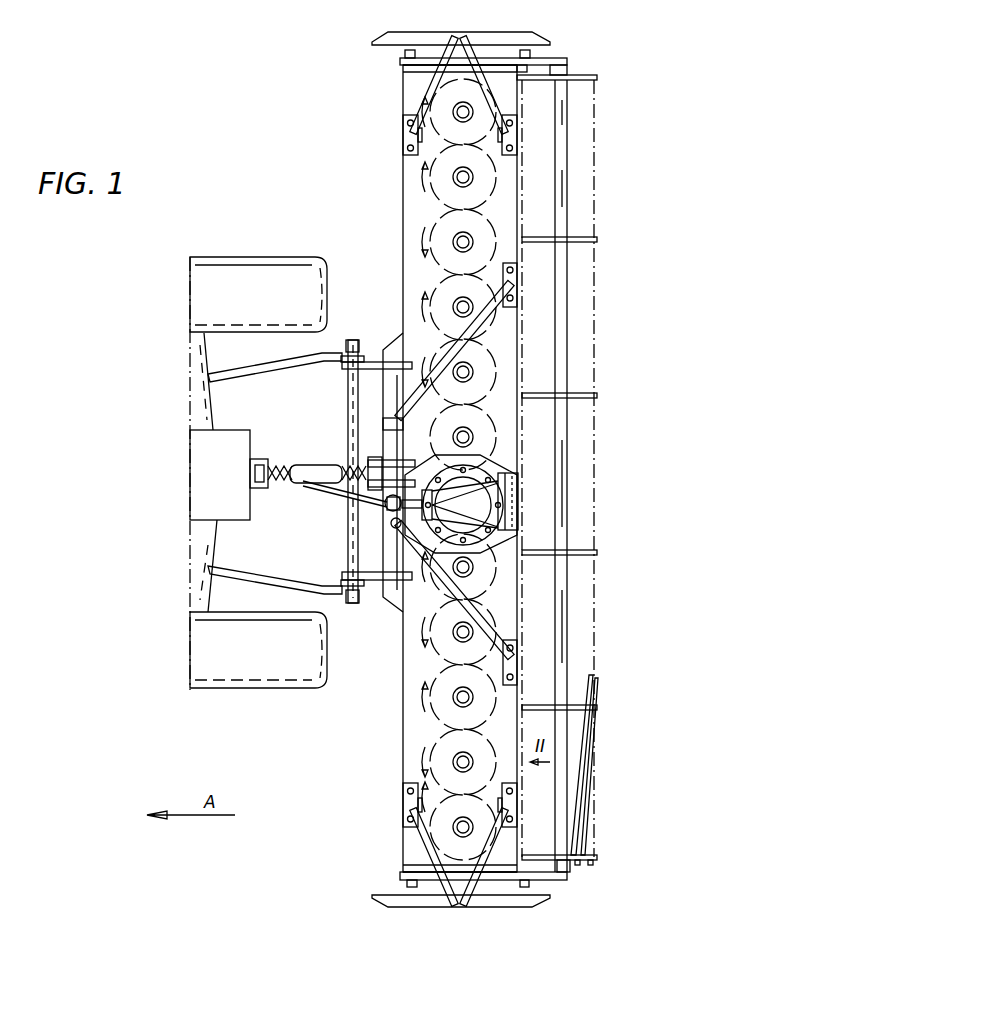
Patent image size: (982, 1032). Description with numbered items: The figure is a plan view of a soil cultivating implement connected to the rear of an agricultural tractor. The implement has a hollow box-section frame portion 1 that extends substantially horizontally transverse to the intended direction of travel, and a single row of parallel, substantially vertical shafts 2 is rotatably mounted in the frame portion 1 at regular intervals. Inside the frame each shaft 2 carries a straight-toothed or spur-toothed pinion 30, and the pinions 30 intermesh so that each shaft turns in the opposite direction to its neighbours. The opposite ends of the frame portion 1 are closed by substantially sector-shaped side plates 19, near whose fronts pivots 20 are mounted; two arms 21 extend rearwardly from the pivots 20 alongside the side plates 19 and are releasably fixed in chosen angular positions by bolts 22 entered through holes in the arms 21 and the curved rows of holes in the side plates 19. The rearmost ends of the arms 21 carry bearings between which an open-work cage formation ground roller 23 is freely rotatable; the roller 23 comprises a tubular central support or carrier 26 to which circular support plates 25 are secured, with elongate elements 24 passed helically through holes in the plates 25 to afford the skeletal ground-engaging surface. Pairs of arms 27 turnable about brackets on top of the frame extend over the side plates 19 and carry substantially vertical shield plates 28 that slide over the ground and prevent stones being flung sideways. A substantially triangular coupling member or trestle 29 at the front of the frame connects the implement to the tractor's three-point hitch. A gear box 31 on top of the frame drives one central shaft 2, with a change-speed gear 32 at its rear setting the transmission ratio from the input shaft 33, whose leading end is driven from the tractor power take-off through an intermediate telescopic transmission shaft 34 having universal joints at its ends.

The hollow box-section frame portion 1 is at (402, 240).
The shafts 2 is at (470, 185).
The side plates 19 is at (400, 70).
The pivots 20 is at (400, 56).
The arms 21 is at (560, 62).
The bolts 22 is at (525, 52).
The ground roller 23 is at (600, 376).
The elongate elements 24 is at (585, 800).
The support plates 25 is at (598, 708).
The central support or carrier 26 is at (568, 648).
The arms 27 is at (490, 92).
The shield plates 28 is at (540, 40).
The coupling member or trestle 29 is at (375, 382).
The pinions 30 is at (486, 312).
The gear box 31 is at (495, 462).
The change-speed gear 32 is at (518, 506).
The shaft 33 is at (396, 527).
The intermediate telescopic transmission shaft 34 is at (322, 492).